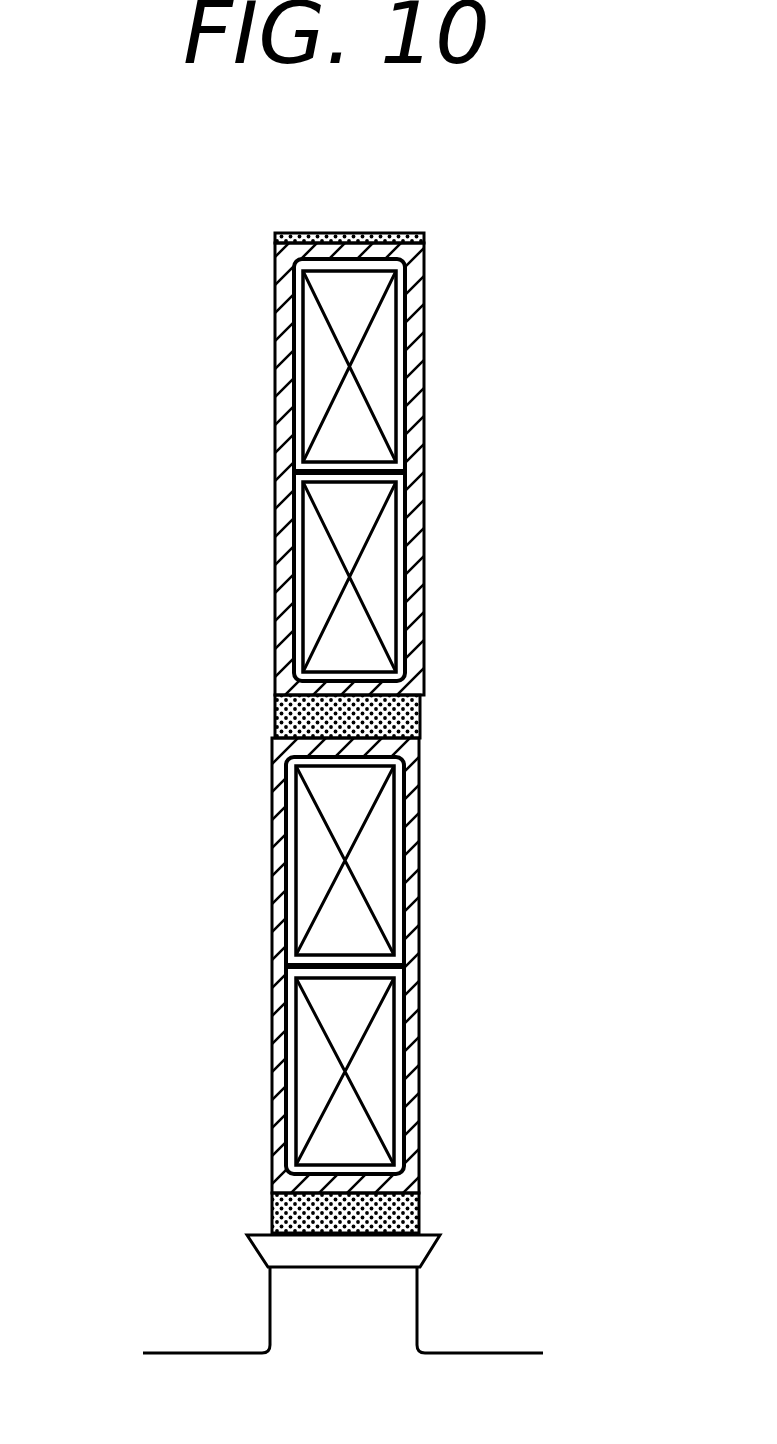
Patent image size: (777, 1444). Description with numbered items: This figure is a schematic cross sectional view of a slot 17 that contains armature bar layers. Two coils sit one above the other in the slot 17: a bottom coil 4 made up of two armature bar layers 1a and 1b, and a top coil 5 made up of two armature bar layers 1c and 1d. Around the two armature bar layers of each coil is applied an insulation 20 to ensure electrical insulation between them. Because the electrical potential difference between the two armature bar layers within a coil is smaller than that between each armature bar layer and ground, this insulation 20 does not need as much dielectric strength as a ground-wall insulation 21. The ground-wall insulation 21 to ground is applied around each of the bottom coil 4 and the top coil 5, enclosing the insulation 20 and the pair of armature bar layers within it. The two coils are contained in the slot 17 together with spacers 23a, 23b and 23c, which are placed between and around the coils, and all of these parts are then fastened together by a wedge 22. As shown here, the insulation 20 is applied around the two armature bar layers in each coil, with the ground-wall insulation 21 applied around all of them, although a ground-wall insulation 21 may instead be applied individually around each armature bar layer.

The armature bar layer 1a is at (383, 380).
The armature bar layer 1b is at (383, 590).
The armature bar layer 1c is at (378, 855).
The armature bar layer 1d is at (378, 1115).
The bottom coil 4 is at (338, 442).
The top coil 5 is at (357, 965).
The slot 17 is at (282, 1312).
The insulation 20 is at (398, 1056).
The ground-wall insulation 21 is at (412, 928).
The wedge 22 is at (275, 1252).
The spacer 23a is at (274, 1213).
The spacer 23b is at (278, 718).
The spacer 23c is at (276, 238).